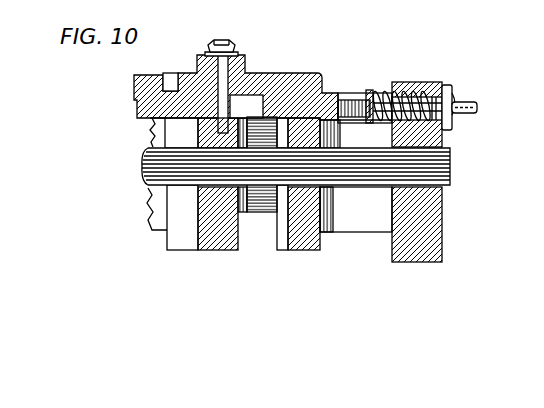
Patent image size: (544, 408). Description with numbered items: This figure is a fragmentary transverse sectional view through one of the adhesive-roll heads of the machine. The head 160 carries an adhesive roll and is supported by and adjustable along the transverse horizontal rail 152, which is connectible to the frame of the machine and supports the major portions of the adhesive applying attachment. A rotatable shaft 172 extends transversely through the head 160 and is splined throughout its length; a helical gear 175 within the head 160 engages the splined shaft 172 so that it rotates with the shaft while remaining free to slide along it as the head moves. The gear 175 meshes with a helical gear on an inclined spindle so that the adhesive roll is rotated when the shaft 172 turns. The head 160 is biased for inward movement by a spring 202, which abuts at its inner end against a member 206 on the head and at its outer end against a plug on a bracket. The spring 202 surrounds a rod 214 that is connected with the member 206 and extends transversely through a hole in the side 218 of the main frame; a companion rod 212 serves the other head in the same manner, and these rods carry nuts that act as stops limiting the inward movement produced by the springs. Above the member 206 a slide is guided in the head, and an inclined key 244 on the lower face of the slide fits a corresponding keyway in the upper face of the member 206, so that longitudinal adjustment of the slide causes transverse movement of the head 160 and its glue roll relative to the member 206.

The inclined key 244 is at (250, 93).
The member 206 is at (323, 93).
The spring 202 is at (378, 92).
The rod 212 is at (430, 93).
The rod 214 is at (468, 101).
The rotatable shaft 172 is at (360, 180).
The helical gear 175 is at (256, 212).
The head 160 is at (302, 249).
The transverse horizontal rail 152 is at (372, 228).
The side of the main frame 218 is at (440, 231).